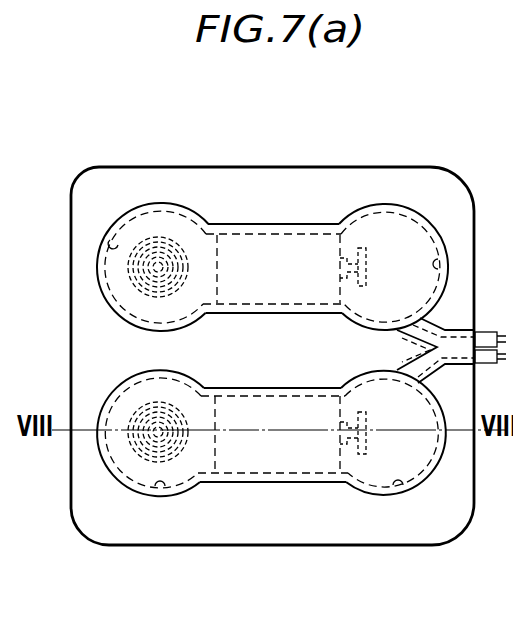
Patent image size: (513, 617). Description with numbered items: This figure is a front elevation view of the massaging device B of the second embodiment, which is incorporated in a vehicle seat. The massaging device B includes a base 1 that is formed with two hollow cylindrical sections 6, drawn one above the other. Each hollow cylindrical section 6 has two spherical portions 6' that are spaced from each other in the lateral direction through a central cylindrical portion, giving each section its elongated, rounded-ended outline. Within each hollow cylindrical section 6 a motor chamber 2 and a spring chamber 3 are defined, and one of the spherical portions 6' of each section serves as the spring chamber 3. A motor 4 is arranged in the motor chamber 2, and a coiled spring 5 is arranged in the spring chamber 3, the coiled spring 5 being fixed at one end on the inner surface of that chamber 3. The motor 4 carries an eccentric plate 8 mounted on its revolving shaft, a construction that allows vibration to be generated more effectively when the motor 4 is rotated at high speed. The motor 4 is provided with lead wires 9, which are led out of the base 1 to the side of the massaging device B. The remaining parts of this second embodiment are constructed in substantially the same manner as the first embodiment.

The base 1 is at (289, 186).
The motor chamber 2 is at (242, 244).
The spring chamber 3 is at (112, 242).
The motor 4 is at (320, 246).
The coiled spring 5 is at (133, 285).
The hollow cylindrical section 6 is at (265, 363).
The spherical portion 6' is at (279, 363).
The eccentric plate 8 is at (368, 263).
The lead wires 9 is at (484, 341).
The massaging device B is at (393, 160).